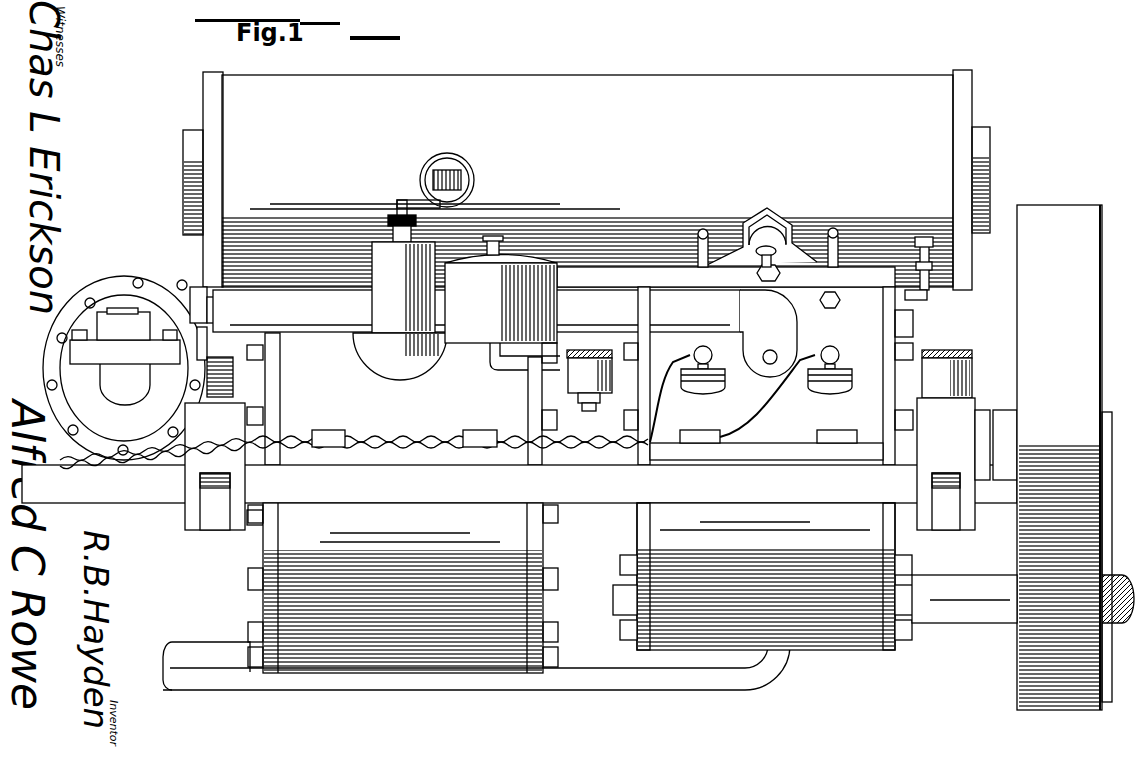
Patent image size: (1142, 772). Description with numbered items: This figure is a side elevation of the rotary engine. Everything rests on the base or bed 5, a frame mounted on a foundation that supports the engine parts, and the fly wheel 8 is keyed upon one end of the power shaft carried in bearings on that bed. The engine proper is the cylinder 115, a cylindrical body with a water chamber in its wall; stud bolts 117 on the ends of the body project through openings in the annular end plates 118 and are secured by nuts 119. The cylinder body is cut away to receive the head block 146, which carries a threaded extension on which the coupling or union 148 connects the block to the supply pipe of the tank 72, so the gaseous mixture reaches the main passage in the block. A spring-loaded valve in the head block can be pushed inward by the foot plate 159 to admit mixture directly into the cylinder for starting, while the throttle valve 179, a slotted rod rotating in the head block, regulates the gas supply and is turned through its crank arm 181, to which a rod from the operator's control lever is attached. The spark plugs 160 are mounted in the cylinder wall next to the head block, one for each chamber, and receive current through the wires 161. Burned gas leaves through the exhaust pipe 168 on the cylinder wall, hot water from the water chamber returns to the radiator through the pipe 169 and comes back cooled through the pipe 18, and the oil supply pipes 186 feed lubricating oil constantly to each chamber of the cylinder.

The tank 72 is at (633, 74).
The fly wheel 8 is at (1061, 212).
The pipe 18 is at (313, 334).
The coupling or union 148 is at (785, 212).
The head block 146 is at (795, 223).
The foot plate 159 is at (768, 242).
The oil supply pipes 186 is at (843, 235).
The crank arm 181 is at (923, 247).
The throttle valve 179 is at (922, 290).
The spark plugs 160 is at (706, 392).
The wires 161 is at (417, 436).
The base or bed 5 is at (509, 495).
The annular end plates 118 is at (641, 506).
The stud bolts 117 is at (615, 598).
The nuts 119 is at (648, 622).
The cylinder 115 is at (766, 576).
The exhaust pipe 168 is at (958, 626).
The pipe 169 is at (595, 694).